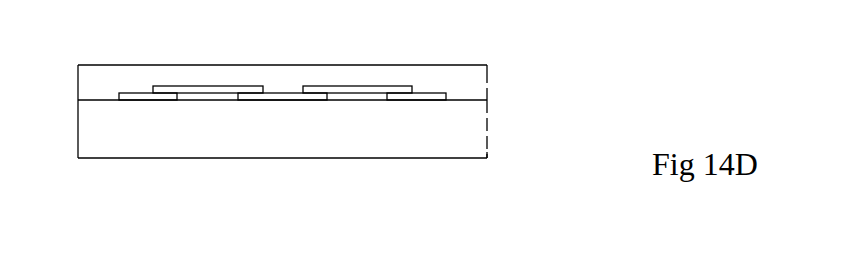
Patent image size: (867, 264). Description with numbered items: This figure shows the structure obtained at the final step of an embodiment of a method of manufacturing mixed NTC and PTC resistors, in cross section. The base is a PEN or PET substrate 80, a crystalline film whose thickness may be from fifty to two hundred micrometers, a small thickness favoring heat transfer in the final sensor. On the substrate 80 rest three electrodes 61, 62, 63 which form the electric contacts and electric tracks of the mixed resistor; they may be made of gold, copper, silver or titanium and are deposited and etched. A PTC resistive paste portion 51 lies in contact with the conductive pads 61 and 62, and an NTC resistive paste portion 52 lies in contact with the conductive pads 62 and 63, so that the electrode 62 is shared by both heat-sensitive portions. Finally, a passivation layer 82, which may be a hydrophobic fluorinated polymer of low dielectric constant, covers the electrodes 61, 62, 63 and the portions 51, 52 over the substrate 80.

The PTC resistive paste portion 51 is at (200, 92).
The NTC resistive paste portion 52 is at (367, 93).
The electrode 61 is at (138, 95).
The electrode 62 is at (278, 95).
The electrode 63 is at (425, 95).
The substrate 80 is at (468, 125).
The passivation layer 82 is at (90, 79).